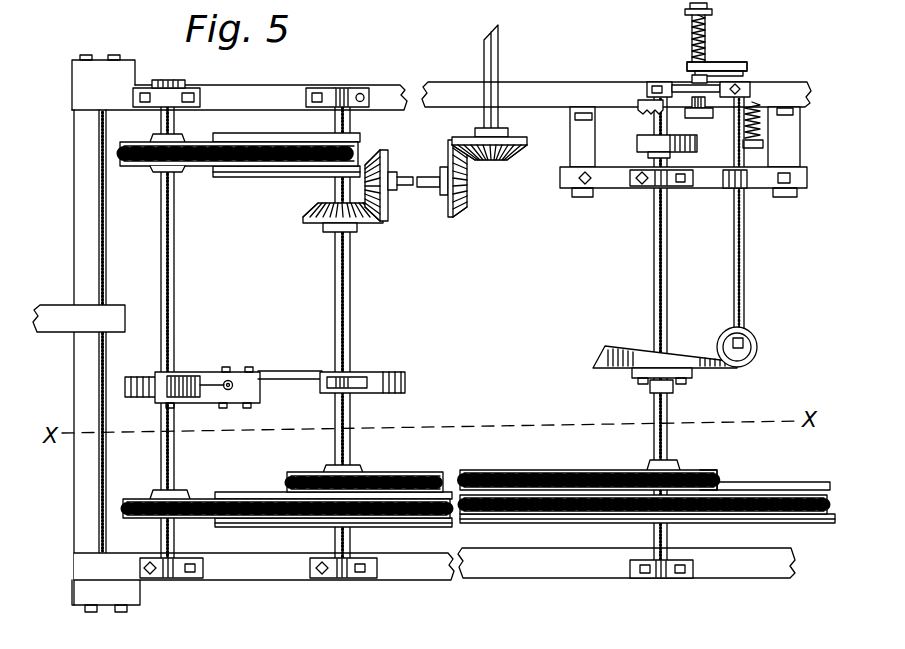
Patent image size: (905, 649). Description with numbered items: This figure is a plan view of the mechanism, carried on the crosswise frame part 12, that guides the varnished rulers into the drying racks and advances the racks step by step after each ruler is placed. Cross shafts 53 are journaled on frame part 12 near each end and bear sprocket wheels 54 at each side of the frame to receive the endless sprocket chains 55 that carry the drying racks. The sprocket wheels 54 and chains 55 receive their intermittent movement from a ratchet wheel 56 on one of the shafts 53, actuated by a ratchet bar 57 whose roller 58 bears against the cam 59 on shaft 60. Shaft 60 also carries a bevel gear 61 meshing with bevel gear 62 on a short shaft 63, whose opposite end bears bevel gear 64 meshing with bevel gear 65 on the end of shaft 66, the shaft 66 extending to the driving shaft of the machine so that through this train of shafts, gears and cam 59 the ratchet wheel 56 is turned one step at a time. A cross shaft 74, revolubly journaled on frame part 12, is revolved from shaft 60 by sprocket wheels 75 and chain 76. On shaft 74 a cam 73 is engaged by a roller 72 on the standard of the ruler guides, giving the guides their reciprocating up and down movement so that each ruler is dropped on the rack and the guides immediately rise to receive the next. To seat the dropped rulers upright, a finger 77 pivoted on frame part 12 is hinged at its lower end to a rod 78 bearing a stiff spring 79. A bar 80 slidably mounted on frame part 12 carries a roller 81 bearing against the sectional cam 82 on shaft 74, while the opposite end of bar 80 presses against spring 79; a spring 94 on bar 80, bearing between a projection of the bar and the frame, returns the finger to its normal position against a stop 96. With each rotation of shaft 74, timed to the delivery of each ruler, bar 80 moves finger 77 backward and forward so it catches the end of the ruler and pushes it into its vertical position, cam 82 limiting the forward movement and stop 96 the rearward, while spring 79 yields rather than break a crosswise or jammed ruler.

The frame part 12 is at (557, 82).
The cross shaft 53 is at (176, 292).
The sprocket wheel 54 is at (160, 167).
The endless sprocket chain 55 is at (206, 168).
The ratchet wheel 56 is at (134, 377).
The ratchet bar 57 is at (283, 371).
The roller 58 is at (363, 372).
The cam 59 is at (406, 383).
The shaft 60 is at (352, 311).
The bevel gear 61 is at (370, 226).
The bevel gear 62 is at (386, 212).
The short shaft 63 is at (410, 176).
The bevel gear 64 is at (462, 208).
The bevel gear 65 is at (503, 160).
The shaft 66 is at (499, 58).
The roller 72 is at (643, 143).
The cam 73 is at (682, 150).
The cross shaft 74 is at (655, 258).
The sprocket wheel 75 is at (364, 470).
The chain 76 is at (718, 473).
The finger 77 is at (705, 116).
The rod 78 is at (712, 67).
The spring 79 is at (706, 30).
The bar 80 is at (747, 270).
The roller 81 is at (758, 345).
The sectional cam 82 is at (612, 350).
The spring 94 is at (760, 125).
The stop 96 is at (692, 80).